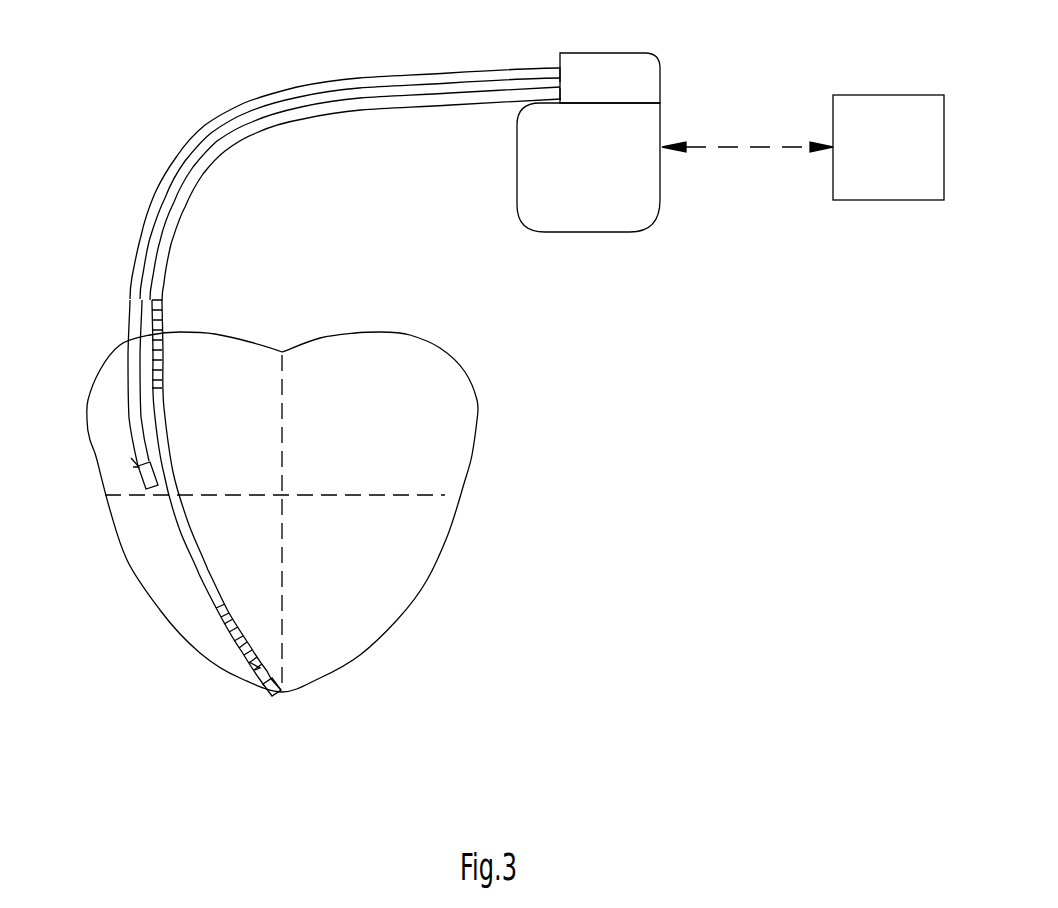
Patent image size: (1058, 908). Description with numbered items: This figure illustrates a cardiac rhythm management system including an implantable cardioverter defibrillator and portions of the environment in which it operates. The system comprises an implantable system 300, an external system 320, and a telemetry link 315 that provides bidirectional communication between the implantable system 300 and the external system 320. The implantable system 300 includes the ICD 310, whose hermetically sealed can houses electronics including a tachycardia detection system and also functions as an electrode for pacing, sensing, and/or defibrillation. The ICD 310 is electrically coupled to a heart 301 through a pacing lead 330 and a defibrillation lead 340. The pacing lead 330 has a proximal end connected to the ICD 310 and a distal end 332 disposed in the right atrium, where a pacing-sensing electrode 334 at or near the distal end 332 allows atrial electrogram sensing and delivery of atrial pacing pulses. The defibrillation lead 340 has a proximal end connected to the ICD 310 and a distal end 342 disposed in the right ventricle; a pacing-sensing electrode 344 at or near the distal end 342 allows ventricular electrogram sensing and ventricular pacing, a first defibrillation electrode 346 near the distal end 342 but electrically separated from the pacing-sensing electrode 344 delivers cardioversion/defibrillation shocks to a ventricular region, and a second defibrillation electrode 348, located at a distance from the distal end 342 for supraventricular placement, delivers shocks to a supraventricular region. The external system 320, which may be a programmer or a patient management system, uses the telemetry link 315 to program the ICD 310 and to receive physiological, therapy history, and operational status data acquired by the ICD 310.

The implantable system 300 is at (622, 156).
The heart 301 is at (448, 538).
The ICD 310 is at (610, 232).
The telemetry link 315 is at (748, 147).
The external system 320 is at (892, 95).
The pacing lead 330 is at (306, 283).
The distal end 332 is at (101, 421).
The pacing-sensing electrode 334 is at (142, 477).
The defibrillation lead 340 is at (357, 410).
The distal end 342 is at (283, 693).
The pacing-sensing electrode 344 is at (266, 682).
The first defibrillation electrode 346 is at (227, 633).
The second defibrillation electrode 348 is at (163, 318).